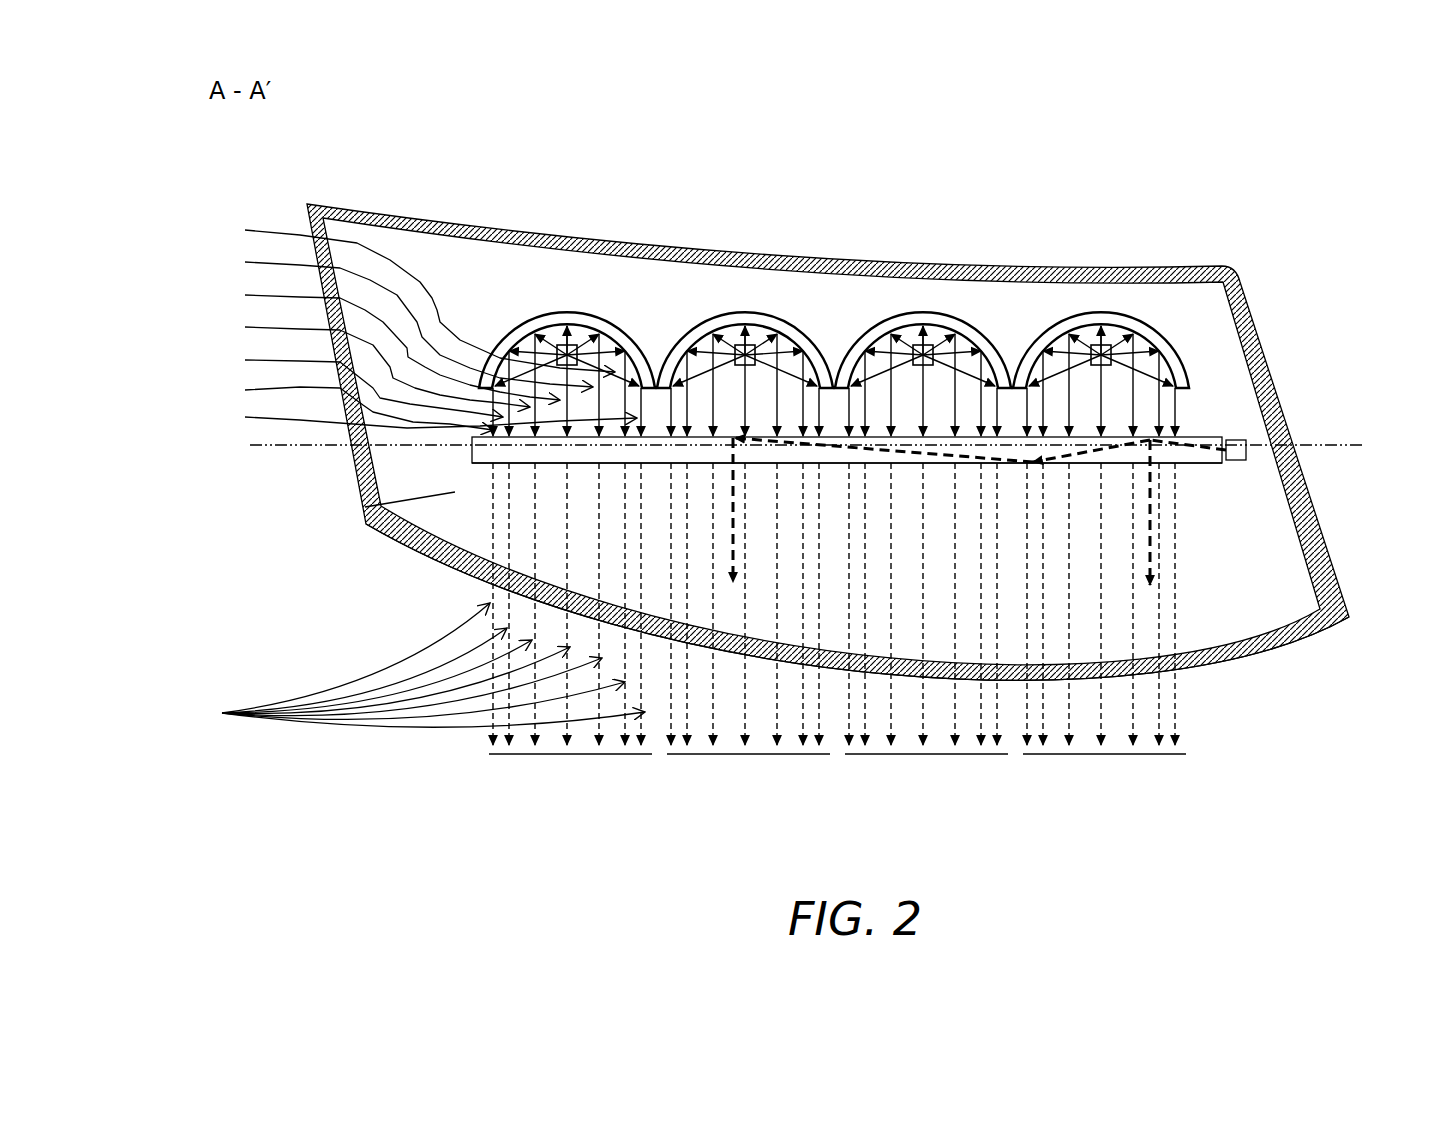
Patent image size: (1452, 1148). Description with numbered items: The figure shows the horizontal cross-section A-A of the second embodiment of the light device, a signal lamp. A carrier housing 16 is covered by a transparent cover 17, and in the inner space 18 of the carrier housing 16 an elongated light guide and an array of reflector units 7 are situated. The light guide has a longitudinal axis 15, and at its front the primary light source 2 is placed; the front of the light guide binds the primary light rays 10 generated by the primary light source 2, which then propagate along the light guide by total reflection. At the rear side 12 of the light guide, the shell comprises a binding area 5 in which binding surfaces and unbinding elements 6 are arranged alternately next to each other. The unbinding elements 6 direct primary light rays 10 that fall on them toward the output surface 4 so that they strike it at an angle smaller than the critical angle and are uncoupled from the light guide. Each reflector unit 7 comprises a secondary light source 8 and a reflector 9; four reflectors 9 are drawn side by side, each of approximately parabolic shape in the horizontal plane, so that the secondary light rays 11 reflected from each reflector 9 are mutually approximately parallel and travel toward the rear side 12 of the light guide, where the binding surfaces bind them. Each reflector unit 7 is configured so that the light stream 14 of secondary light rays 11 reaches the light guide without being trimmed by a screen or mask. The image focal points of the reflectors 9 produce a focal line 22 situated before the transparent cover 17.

The primary light source 2 is at (1249, 449).
The output surface 4 is at (1118, 465).
The binding area 5 is at (918, 392).
The unbinding elements 6 is at (1118, 435).
The reflector unit 7 is at (805, 247).
The secondary light source 8 is at (805, 252).
The reflector 9 is at (834, 253).
The primary light rays 10 is at (733, 548).
The secondary light rays 11 is at (414, 471).
The rear side 12 is at (918, 392).
The light stream 14 is at (196, 218).
The longitudinal axis 15 is at (1323, 443).
The carrier housing 16 is at (1150, 262).
The transparent cover 17 is at (392, 548).
The inner space 18 is at (370, 505).
The focal line 22 is at (837, 647).